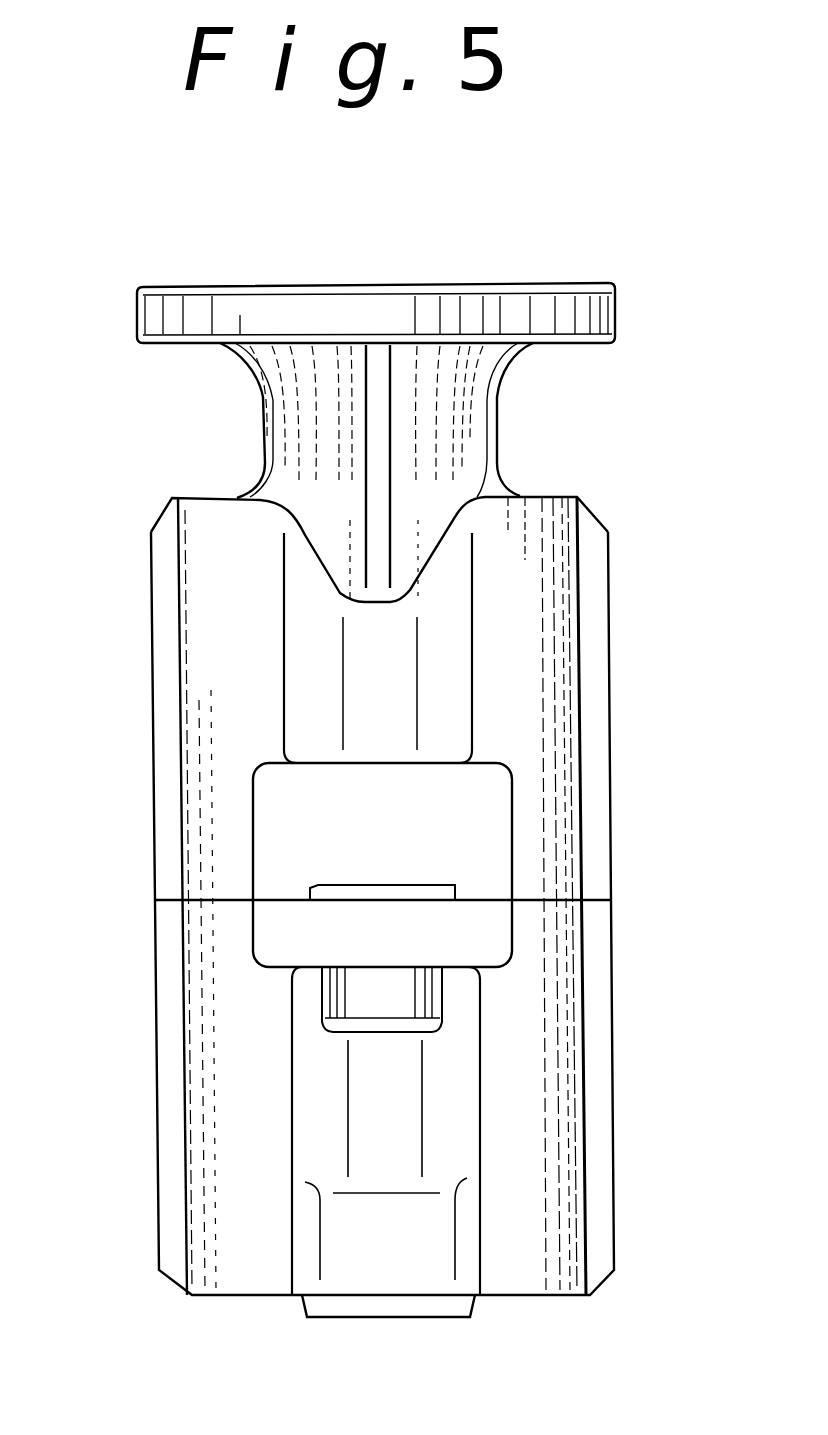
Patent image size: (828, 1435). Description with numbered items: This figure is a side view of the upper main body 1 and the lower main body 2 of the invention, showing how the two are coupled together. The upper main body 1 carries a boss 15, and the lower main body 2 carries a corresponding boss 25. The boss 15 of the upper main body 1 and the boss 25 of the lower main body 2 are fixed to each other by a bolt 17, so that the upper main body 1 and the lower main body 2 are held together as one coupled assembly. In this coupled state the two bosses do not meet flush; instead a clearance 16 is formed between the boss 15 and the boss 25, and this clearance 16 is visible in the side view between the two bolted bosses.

The upper main body 1 is at (563, 537).
The lower main body 2 is at (556, 1266).
The boss 15 is at (497, 818).
The clearance 16 is at (317, 888).
The bolt 17 is at (440, 1005).
The boss 25 is at (497, 935).